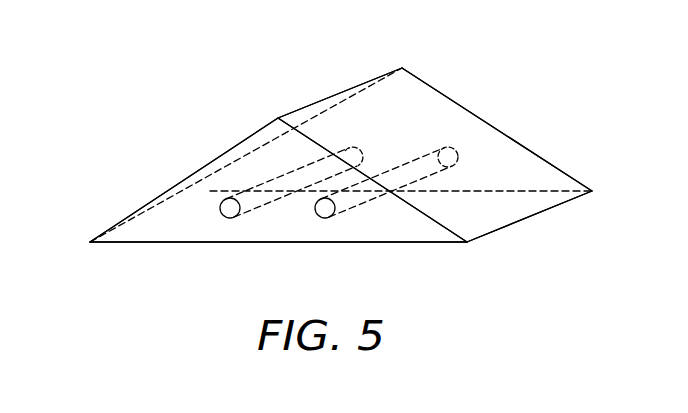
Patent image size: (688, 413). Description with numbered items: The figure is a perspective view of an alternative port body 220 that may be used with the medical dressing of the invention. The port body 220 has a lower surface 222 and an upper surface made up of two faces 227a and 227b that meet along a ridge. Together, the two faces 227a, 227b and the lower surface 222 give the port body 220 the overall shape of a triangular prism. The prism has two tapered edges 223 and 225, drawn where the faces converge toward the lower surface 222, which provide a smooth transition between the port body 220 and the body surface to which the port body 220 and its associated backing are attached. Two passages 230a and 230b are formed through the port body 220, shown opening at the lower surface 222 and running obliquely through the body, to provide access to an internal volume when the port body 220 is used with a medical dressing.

The port body 220 is at (503, 90).
The lower surface 222 is at (145, 244).
The tapered edge 223 is at (185, 200).
The tapered edge 225 is at (522, 222).
The face 227a is at (238, 144).
The face 227b is at (422, 90).
The passage 230a is at (224, 216).
The passage 230b is at (320, 216).